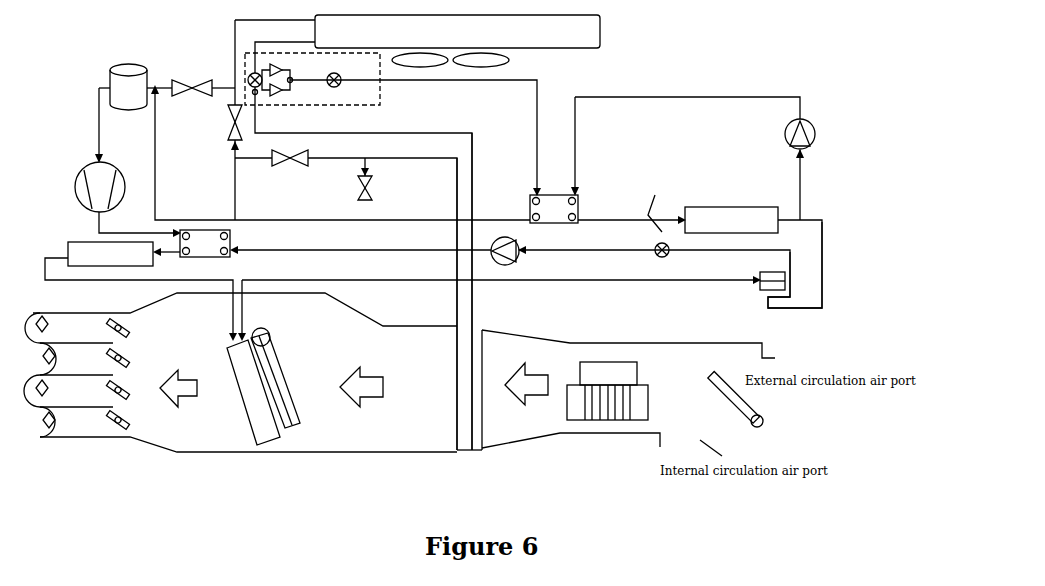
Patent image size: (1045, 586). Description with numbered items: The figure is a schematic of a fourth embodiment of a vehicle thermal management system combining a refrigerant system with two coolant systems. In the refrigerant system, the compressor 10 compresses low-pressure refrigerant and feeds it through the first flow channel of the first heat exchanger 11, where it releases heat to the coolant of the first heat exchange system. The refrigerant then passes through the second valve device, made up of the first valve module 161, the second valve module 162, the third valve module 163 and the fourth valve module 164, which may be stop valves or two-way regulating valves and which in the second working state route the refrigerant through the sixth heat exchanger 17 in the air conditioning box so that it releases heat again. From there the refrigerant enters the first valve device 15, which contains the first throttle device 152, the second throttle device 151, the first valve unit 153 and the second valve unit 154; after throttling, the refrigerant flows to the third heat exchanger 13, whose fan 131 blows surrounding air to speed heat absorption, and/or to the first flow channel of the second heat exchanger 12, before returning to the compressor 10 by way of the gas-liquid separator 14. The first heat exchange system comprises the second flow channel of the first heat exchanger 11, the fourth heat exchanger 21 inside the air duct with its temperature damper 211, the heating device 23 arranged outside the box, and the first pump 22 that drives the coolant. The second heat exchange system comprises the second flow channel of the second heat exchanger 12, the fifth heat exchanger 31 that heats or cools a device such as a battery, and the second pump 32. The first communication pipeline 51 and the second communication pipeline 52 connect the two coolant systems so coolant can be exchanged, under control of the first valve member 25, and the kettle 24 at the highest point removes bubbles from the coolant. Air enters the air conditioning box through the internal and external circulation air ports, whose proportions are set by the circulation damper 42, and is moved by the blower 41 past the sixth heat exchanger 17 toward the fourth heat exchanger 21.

The compressor 10 is at (75, 187).
The first heat exchanger 11 is at (232, 234).
The second heat exchanger 12 is at (580, 202).
The third heat exchanger 13 is at (600, 35).
The fan 131 is at (510, 63).
The gas-liquid separator 14 is at (124, 58).
The first valve device 15 is at (386, 100).
The second throttle device 151 is at (340, 92).
The first throttle device 152 is at (247, 72).
The first valve unit 153 is at (262, 72).
The second valve unit 154 is at (280, 106).
The first valve module 161 is at (230, 128).
The second valve module 162 is at (291, 166).
The third valve module 163 is at (372, 193).
The fourth valve module 164 is at (193, 98).
The sixth heat exchanger 17 is at (475, 332).
The fourth heat exchanger 21 is at (265, 405).
The temperature damper 211 is at (287, 355).
The first pump 22 is at (522, 262).
The heating device 23 is at (75, 248).
The kettle 24 is at (770, 292).
The first valve member 25 is at (655, 248).
The fifth heat exchanger 31 is at (730, 206).
The second pump 32 is at (785, 138).
The blower 41 is at (575, 414).
The circulation damper 42 is at (740, 398).
The first communication pipeline 51 is at (650, 196).
The second communication pipeline 52 is at (808, 310).